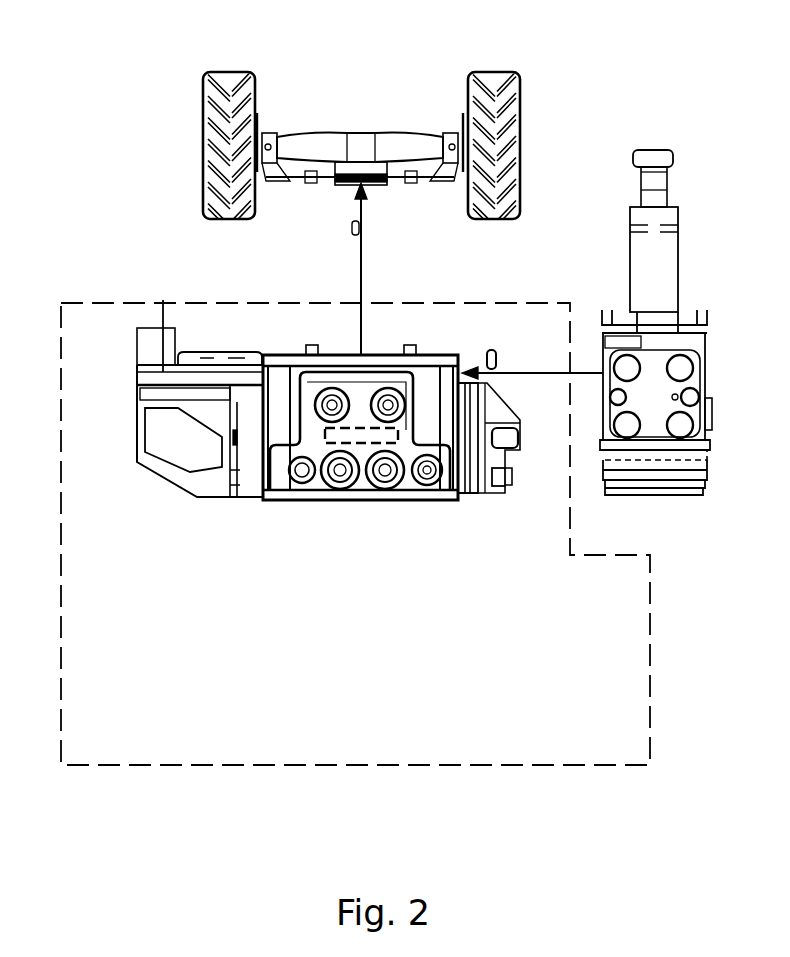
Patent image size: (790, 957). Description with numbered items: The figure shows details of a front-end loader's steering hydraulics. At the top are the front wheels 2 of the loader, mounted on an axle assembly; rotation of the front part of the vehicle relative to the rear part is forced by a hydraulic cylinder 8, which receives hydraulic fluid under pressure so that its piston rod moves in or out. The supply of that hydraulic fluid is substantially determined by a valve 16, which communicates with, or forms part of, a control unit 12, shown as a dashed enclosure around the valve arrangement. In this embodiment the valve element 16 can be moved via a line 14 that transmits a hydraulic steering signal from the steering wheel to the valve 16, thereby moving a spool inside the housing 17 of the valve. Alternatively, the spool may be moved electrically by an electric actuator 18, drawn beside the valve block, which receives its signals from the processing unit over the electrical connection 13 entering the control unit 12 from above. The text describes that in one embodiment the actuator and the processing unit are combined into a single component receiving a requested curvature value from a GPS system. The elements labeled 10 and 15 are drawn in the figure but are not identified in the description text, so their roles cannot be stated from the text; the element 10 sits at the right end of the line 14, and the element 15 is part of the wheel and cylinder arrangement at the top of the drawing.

The front wheels 2 is at (508, 88).
The hydraulic cylinder 8 is at (372, 172).
The steering unit 10 is at (656, 283).
The control unit 12 is at (638, 648).
The electrical connection 13 is at (163, 297).
The line 14 is at (533, 367).
The steering axle 15 is at (397, 145).
The valve 16 is at (352, 437).
The housing 17 is at (466, 473).
The electric actuator 18 is at (177, 437).